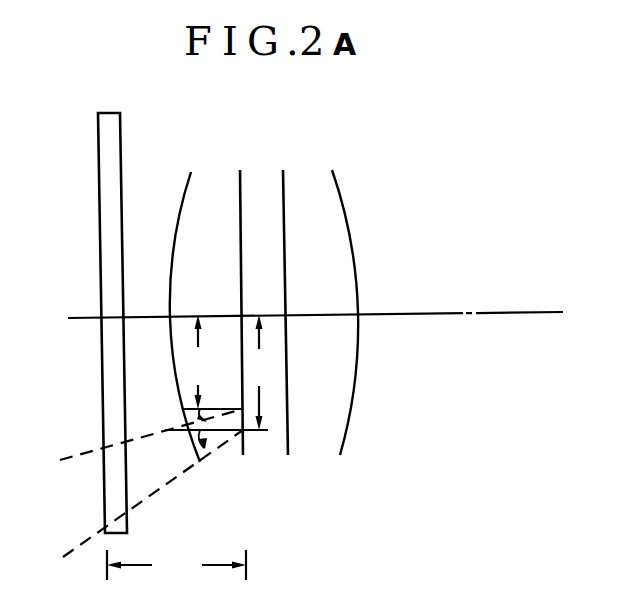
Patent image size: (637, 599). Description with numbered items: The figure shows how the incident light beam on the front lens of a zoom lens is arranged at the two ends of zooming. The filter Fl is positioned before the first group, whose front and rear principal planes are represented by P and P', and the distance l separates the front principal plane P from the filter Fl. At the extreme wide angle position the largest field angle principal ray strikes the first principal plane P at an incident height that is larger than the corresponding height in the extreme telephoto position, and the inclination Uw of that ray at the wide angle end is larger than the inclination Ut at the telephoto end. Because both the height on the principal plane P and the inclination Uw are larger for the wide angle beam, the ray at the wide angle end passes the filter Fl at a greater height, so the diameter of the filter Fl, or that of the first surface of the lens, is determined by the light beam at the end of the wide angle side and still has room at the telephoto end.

The filter Fl is at (97, 122).
The first principal plane P is at (250, 294).
The rear principal plane P' is at (276, 290).
The inclination at telephoto end Ut is at (205, 413).
The inclination at wide angle end Uw is at (206, 446).
The distance between front principal plane and filter l is at (176, 566).